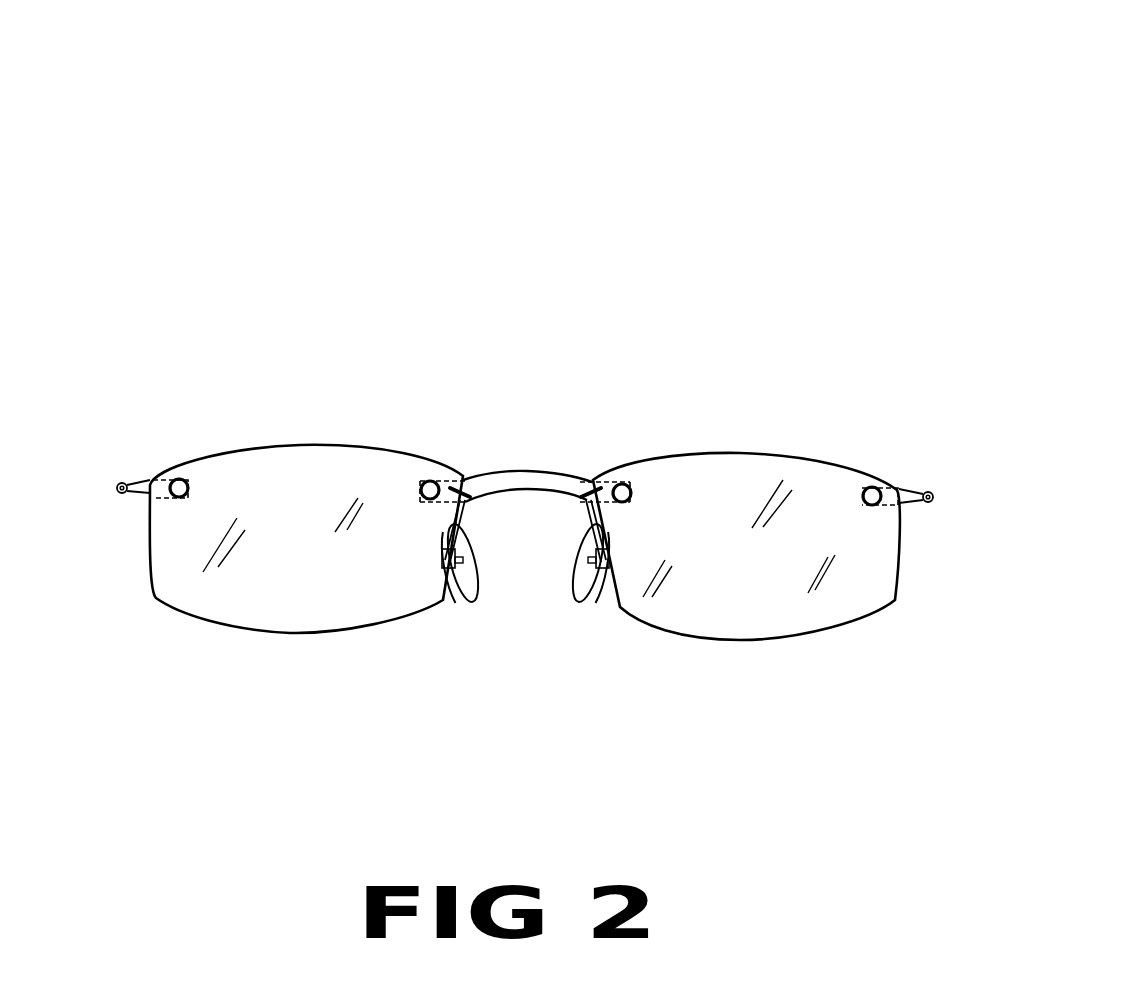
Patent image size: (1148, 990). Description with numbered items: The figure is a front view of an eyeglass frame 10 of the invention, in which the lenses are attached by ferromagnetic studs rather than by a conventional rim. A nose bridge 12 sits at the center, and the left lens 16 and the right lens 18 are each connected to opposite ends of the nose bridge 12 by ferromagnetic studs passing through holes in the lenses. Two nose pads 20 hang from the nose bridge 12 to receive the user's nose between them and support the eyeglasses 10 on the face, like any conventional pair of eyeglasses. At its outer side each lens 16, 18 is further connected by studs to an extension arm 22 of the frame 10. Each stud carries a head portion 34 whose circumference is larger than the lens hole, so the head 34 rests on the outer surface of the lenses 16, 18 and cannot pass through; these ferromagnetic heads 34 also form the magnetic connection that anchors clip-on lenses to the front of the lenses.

The eyeglass frame 10 is at (684, 201).
The nose bridge 12 is at (520, 482).
The left lens 16 is at (771, 612).
The right lens 18 is at (270, 616).
The nose pads 20 is at (573, 523).
The extension arm 22 is at (142, 492).
The head portion 34 is at (178, 478).